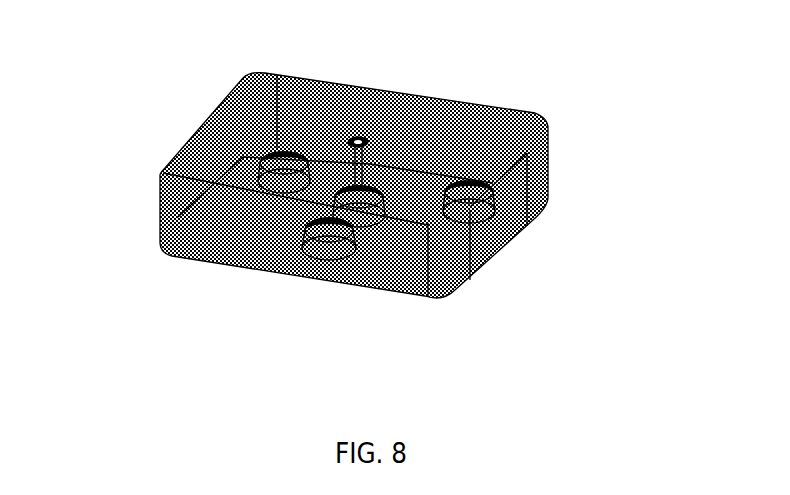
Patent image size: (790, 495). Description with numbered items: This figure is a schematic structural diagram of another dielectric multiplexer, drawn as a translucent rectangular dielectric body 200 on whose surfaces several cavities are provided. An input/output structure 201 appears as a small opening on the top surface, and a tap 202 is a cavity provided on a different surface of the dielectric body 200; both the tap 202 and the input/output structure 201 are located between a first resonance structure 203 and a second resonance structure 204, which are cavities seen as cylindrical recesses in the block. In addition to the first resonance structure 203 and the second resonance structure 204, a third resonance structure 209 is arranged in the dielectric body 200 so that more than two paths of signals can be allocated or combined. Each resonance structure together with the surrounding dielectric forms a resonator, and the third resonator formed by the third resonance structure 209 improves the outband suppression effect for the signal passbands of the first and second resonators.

The dielectric body 200 is at (218, 140).
The input/output structure 201 is at (366, 140).
The tap 202 is at (372, 222).
The first resonance structure 203 is at (262, 182).
The second resonance structure 204 is at (475, 227).
The third resonance structure 209 is at (335, 258).